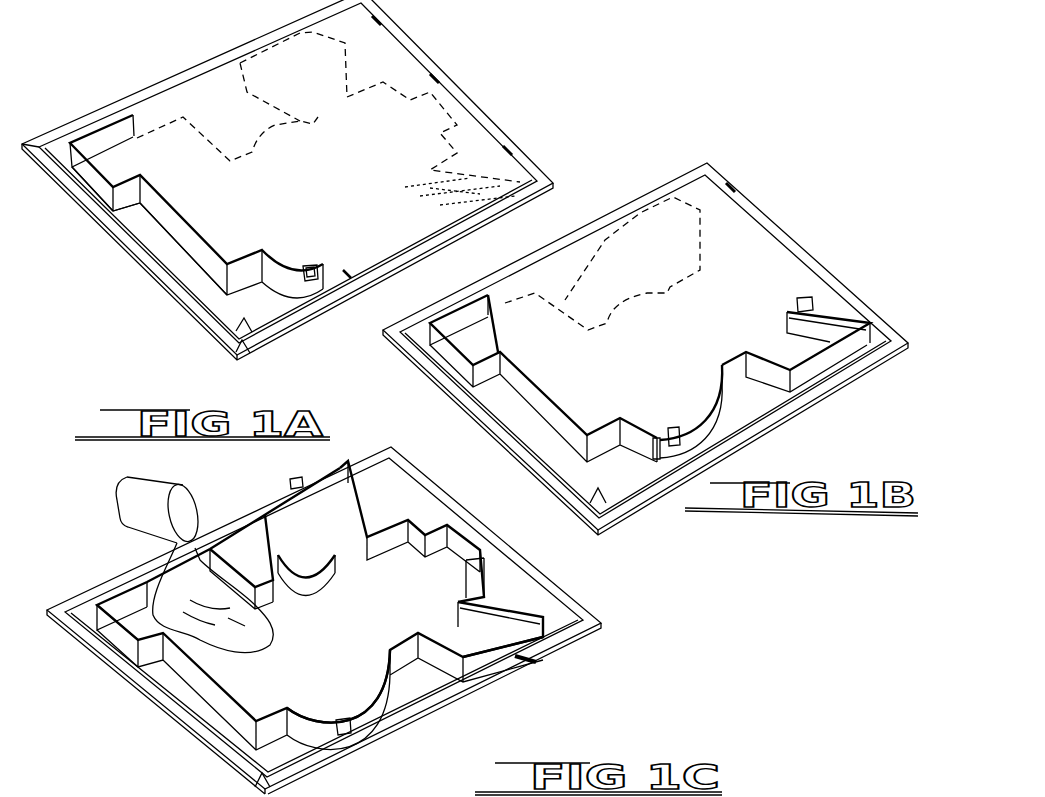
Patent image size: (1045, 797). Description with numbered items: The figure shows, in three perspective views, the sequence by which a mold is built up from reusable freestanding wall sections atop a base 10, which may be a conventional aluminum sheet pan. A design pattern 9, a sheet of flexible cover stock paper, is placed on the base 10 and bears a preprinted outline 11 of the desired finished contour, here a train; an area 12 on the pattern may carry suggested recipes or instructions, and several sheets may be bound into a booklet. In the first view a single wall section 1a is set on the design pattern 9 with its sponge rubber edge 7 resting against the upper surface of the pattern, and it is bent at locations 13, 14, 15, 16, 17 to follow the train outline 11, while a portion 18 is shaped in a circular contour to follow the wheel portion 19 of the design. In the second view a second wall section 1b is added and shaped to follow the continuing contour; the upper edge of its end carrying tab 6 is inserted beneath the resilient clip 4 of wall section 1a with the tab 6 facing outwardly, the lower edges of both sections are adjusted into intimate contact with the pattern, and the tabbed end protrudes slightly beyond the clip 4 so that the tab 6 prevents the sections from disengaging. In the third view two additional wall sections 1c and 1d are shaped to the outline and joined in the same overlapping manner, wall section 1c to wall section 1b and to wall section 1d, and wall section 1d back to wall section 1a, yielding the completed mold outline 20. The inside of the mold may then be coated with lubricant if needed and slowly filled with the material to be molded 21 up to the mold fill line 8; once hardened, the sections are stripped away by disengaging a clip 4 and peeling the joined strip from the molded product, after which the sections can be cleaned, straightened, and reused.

In FIG. 1A, the wall section 1a is at (97, 188).
In FIG. 1B, the wall section 1a is at (563, 428).
In FIG. 1C, the wall section 1a is at (123, 648).
In FIG. 1B, the second wall section 1b is at (712, 440).
In FIG. 1C, the second wall section 1b is at (383, 718).
In FIG. 1C, the wall section 1c is at (460, 551).
In FIG. 1C, the wall section 1d is at (223, 570).
In FIG. 1B, the clip 4 is at (673, 428).
In FIG. 1B, the tab 6 is at (655, 460).
In FIG. 1A, the sponge rubber edge 7 is at (186, 260).
In FIG. 1B, the sponge rubber edge 7 is at (453, 375).
In FIG. 1C, the sponge rubber edge 7 is at (197, 700).
In FIG. 1C, the mold fill line 8 is at (140, 590).
In FIG. 1A, the design pattern 9 is at (373, 50).
In FIG. 1B, the design pattern 9 is at (730, 203).
In FIG. 1C, the design pattern 9 is at (388, 487).
In FIG. 1A, the base 10 is at (443, 75).
In FIG. 1A, the preprinted outline 11 is at (452, 147).
In FIG. 1A, the area 12 is at (477, 221).
In FIG. 1A, the bend location 13 is at (62, 150).
In FIG. 1A, the bend location 14 is at (108, 212).
In FIG. 1A, the bend location 15 is at (147, 205).
In FIG. 1A, the bend location 16 is at (220, 290).
In FIG. 1A, the bend location 17 is at (269, 316).
In FIG. 1A, the circular portion 18 is at (293, 277).
In FIG. 1A, the wheel portion 19 is at (348, 275).
In FIG. 1C, the completed mold outline 20 is at (537, 660).
In FIG. 1C, the material to be molded 21 is at (190, 540).